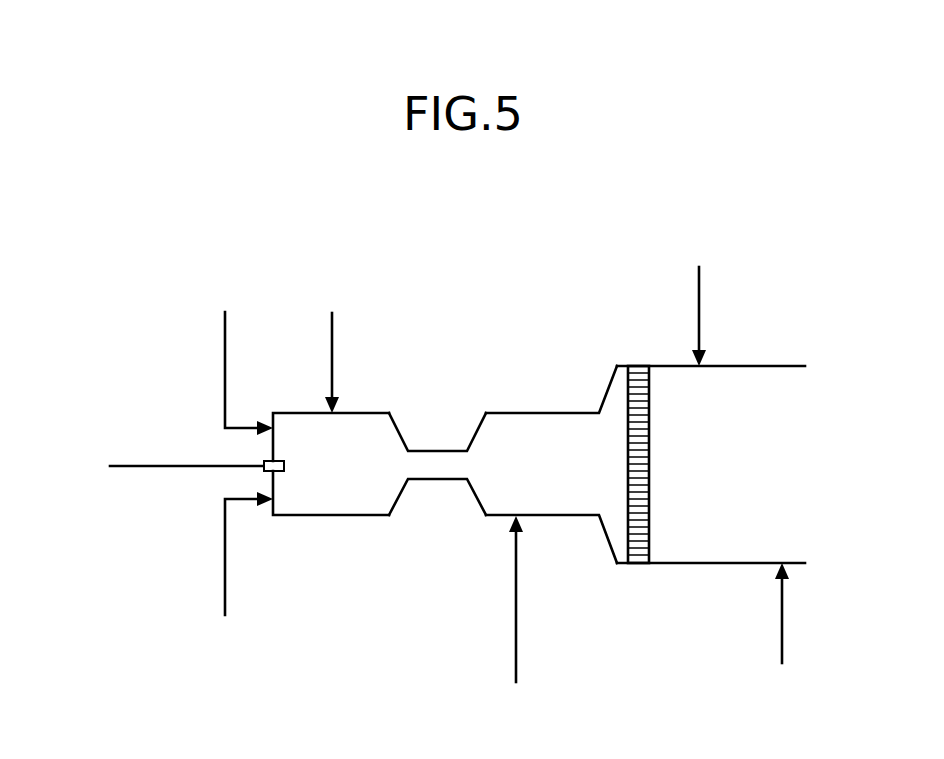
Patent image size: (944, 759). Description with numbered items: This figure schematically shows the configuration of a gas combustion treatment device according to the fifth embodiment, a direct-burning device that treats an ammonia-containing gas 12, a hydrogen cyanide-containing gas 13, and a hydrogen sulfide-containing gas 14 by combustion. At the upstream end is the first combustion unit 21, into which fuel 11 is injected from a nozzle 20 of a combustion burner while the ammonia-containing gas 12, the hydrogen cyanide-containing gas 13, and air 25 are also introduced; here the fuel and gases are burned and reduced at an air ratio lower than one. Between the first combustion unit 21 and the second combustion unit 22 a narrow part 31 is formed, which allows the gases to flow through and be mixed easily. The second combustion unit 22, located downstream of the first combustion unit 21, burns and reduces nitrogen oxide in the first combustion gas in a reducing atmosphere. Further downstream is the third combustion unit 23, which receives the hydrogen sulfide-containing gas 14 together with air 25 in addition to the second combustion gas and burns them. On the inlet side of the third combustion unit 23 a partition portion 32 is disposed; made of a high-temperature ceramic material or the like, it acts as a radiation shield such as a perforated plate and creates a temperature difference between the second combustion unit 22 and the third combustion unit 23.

The fuel 11 is at (160, 450).
The ammonia-containing gas 12 is at (212, 356).
The hydrogen cyanide-containing gas 13 is at (347, 366).
The hydrogen sulfide-containing gas 14 is at (714, 321).
The nozzle 20 is at (282, 460).
The first combustion unit 21 is at (333, 518).
The second combustion unit 22 is at (560, 517).
The third combustion unit 23 is at (728, 563).
The air 25 is at (211, 570).
The narrow part 31 is at (430, 480).
The partition portion 32 is at (650, 510).